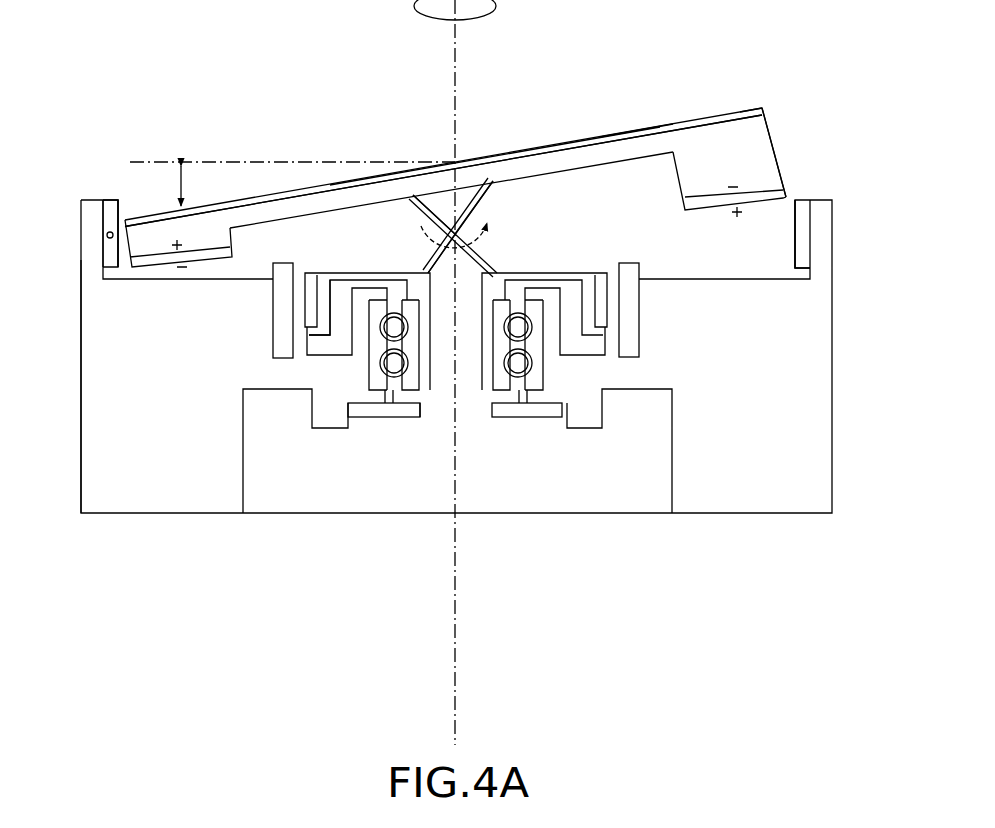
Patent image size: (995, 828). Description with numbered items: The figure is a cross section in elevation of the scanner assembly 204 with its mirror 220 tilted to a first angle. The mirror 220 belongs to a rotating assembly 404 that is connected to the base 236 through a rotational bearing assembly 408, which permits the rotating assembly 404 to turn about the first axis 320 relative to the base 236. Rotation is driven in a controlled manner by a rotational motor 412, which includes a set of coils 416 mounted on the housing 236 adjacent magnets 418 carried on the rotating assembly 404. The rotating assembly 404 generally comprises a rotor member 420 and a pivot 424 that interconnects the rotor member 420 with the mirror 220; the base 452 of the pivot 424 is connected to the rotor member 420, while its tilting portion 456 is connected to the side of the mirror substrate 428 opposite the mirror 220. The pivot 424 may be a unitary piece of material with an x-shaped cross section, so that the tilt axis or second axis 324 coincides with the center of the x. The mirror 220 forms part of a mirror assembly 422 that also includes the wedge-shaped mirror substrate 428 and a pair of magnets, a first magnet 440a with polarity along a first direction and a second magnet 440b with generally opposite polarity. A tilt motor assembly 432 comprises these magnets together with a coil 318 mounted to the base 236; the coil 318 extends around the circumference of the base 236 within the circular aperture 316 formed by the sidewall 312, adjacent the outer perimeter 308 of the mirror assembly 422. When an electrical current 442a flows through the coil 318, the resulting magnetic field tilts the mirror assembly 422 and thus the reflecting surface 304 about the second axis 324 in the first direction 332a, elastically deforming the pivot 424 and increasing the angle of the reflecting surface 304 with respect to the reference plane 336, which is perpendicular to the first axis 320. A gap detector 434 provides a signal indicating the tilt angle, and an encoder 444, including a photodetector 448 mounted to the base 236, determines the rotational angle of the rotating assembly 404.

The scanner assembly 204 is at (640, 572).
The mirror 220 is at (737, 110).
The base 236 is at (110, 505).
The reflecting surface 304 is at (653, 128).
The outer perimeter 308 is at (763, 110).
The sidewall 312 is at (822, 218).
The circular aperture 316 is at (103, 200).
The coil 318 is at (110, 220).
The first axis 320 is at (455, 42).
The second axis 324 is at (443, 198).
The first direction 332a is at (493, 238).
The reference plane 336 is at (230, 162).
The rotating assembly 404 is at (583, 136).
The rotational bearing assembly 408 is at (562, 372).
The rotational motor 412 is at (266, 326).
The set of coils 416 is at (280, 302).
The magnets 418 is at (312, 315).
The rotor member 420 is at (428, 383).
The mirror assembly 422 is at (767, 146).
The pivot 424 is at (488, 197).
The mirror substrate 428 is at (705, 140).
The tilt motor assembly 432 is at (93, 257).
The gap detector 434 is at (99, 205).
The first magnet 440a is at (153, 260).
The second magnet 440b is at (706, 192).
The electrical current 442a is at (104, 235).
The encoder 444 is at (390, 417).
The photodetector 448 is at (526, 417).
The base of the pivot 452 is at (425, 270).
The tilting portion 456 is at (418, 197).